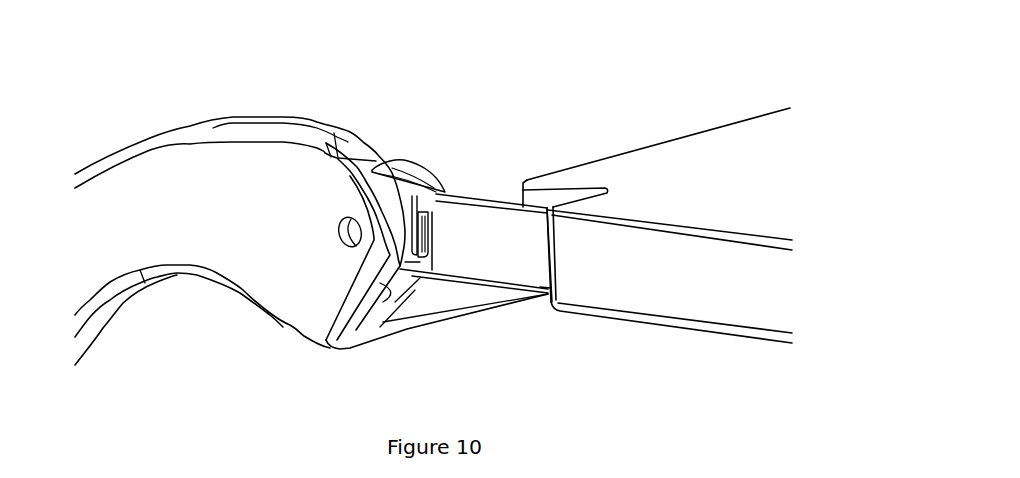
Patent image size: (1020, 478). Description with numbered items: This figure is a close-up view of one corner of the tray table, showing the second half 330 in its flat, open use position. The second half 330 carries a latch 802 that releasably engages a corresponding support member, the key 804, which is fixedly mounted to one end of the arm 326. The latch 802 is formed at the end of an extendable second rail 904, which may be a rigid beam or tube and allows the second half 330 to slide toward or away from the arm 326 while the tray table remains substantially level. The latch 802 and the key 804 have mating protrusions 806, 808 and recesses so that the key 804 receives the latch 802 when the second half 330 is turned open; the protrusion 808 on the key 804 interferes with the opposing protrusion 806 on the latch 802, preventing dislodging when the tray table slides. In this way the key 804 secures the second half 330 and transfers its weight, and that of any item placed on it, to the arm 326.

The arm 326 is at (223, 172).
The second half 330 is at (742, 172).
The latch 802 is at (431, 167).
The key 804 is at (414, 273).
The protrusion 806 is at (416, 228).
The protrusion 808 is at (432, 232).
The second rail 904 is at (495, 238).